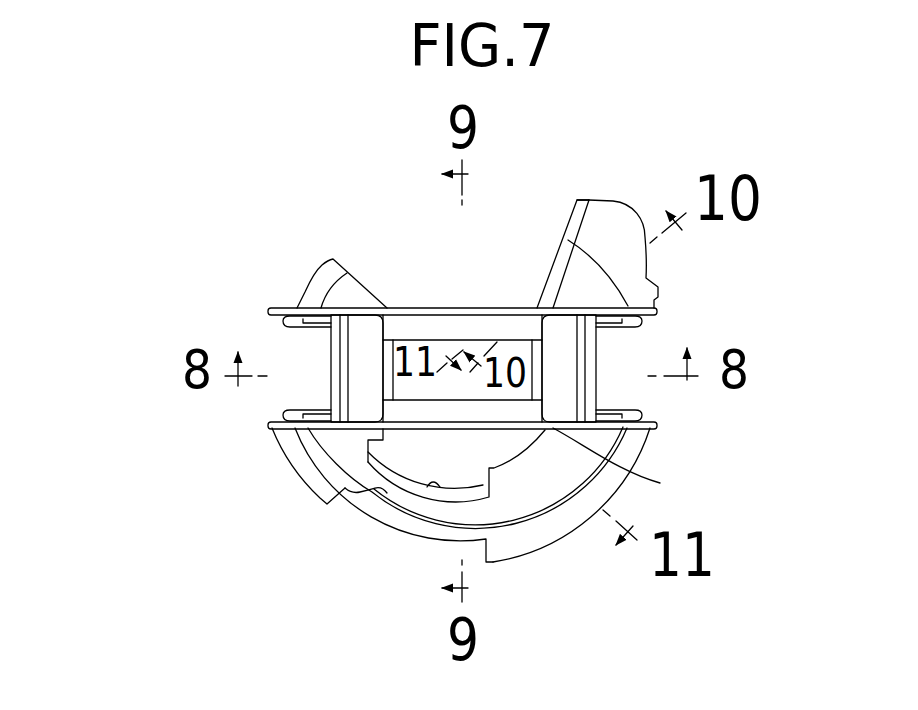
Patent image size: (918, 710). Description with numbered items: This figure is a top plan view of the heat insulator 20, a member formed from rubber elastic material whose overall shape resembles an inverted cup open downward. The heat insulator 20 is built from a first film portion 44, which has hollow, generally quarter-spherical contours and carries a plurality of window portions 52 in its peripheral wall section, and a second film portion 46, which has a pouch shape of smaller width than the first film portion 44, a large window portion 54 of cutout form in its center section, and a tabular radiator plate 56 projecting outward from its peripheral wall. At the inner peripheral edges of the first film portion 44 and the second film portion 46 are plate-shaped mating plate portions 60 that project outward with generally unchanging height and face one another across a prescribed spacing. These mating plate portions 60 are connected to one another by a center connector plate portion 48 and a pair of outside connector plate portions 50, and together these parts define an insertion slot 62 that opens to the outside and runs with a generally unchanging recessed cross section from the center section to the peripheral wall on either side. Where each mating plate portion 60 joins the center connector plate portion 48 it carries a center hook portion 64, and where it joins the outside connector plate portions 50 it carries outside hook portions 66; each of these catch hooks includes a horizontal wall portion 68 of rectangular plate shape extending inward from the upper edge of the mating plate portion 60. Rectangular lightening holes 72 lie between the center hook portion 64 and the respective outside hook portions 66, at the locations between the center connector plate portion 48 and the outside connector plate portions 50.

The heat insulator 20 is at (278, 241).
The first film portion 44 is at (552, 497).
The second film portion 46 is at (606, 226).
The center connector plate portion 48 is at (533, 470).
The outside connector plate portions 50 is at (338, 380).
The window portions 52 is at (337, 503).
The large window portion 54 is at (556, 252).
The radiator plate 56 is at (566, 229).
The mating plate portions 60 is at (641, 290).
The insertion slot 62 is at (388, 326).
The center hook portion 64 is at (449, 303).
The outside hook portions 66 is at (275, 324).
The horizontal wall portion 68 is at (486, 323).
The lightening holes 72 is at (341, 429).